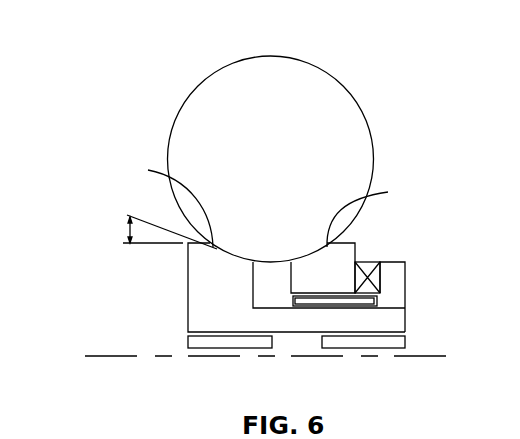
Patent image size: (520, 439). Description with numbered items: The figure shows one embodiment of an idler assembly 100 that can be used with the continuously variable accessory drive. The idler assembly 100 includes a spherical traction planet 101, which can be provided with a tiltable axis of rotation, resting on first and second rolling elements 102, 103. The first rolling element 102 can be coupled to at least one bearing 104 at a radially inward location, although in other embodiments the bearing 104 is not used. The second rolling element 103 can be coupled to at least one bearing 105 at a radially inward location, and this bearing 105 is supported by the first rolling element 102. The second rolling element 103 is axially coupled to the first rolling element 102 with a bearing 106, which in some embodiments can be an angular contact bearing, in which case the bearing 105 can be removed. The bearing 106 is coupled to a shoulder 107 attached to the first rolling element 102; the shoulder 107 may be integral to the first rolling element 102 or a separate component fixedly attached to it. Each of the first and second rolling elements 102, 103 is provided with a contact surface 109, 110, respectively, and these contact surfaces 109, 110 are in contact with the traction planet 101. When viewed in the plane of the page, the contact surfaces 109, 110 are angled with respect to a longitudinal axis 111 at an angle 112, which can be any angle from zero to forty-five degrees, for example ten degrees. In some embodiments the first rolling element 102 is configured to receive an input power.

The idler assembly 100 is at (107, 193).
The spherical traction planet 101 is at (340, 82).
The first rolling element 102 is at (187, 284).
The second rolling element 103 is at (356, 258).
The bearing 104 is at (188, 342).
The bearing 105 is at (293, 300).
The bearing 106 is at (372, 261).
The shoulder 107 is at (406, 287).
The contact surface 109 is at (148, 170).
The contact surface 110 is at (388, 192).
The longitudinal axis 111 is at (443, 356).
The angle 112 is at (129, 230).